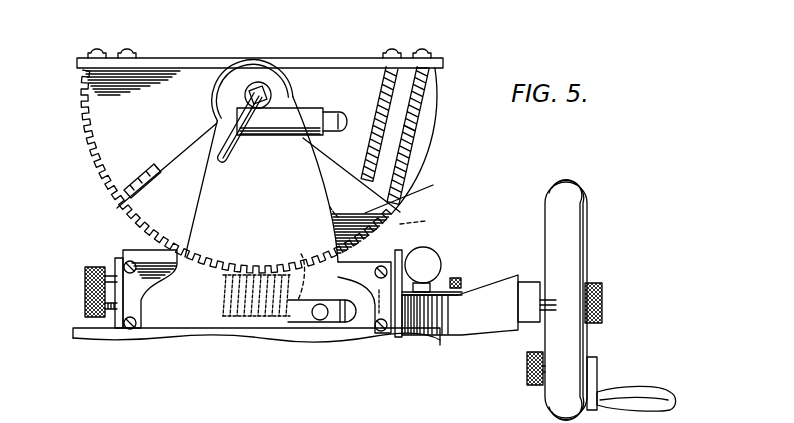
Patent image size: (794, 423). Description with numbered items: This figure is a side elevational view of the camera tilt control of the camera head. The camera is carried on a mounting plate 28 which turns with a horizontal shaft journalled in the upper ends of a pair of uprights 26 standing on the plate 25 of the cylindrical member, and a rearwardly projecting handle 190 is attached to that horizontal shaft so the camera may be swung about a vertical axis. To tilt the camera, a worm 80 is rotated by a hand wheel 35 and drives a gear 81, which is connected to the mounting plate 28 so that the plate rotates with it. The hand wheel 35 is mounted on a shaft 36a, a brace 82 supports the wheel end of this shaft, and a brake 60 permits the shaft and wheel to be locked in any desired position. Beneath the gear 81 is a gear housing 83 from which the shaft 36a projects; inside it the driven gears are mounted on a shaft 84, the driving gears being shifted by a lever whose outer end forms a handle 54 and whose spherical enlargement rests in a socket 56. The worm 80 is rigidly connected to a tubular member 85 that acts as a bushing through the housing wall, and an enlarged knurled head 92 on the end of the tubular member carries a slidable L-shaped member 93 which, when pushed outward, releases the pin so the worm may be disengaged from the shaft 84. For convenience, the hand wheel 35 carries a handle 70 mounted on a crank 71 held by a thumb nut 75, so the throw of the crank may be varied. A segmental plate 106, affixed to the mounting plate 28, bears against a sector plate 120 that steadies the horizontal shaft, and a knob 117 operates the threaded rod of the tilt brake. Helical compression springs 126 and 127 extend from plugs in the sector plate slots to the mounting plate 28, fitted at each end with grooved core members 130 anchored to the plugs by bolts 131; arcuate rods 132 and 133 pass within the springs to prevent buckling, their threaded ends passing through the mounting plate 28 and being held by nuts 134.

The nuts 134 is at (133, 55).
The mounting plate 28 is at (308, 61).
The core members 130 is at (433, 87).
The arcuate rod 132 is at (397, 110).
The arcuate rod 133 is at (427, 133).
The helical compression spring 126 is at (427, 153).
The helical compression spring 127 is at (417, 193).
The gear 81 is at (426, 217).
The sector plate 120 is at (351, 195).
The segmental plate 106 is at (259, 173).
The bolts 131 is at (148, 173).
The handle 190 is at (335, 120).
The uprights 26 is at (261, 161).
The shaft 84 is at (289, 269).
The brake 60 is at (432, 250).
The knob 117 is at (460, 280).
The hand wheel 35 is at (570, 217).
The L-shaped member 93 is at (97, 267).
The tubular member 85 is at (85, 283).
The knurled head 92 is at (88, 308).
The gear housing 83 is at (130, 308).
The worm 80 is at (243, 323).
The handle 54 is at (318, 317).
The socket 56 is at (338, 317).
The plate 25 is at (407, 337).
The brace 82 is at (460, 327).
The shaft 36a is at (460, 295).
The thumb nut 75 is at (528, 358).
The crank 71 is at (592, 368).
The handle 70 is at (663, 402).